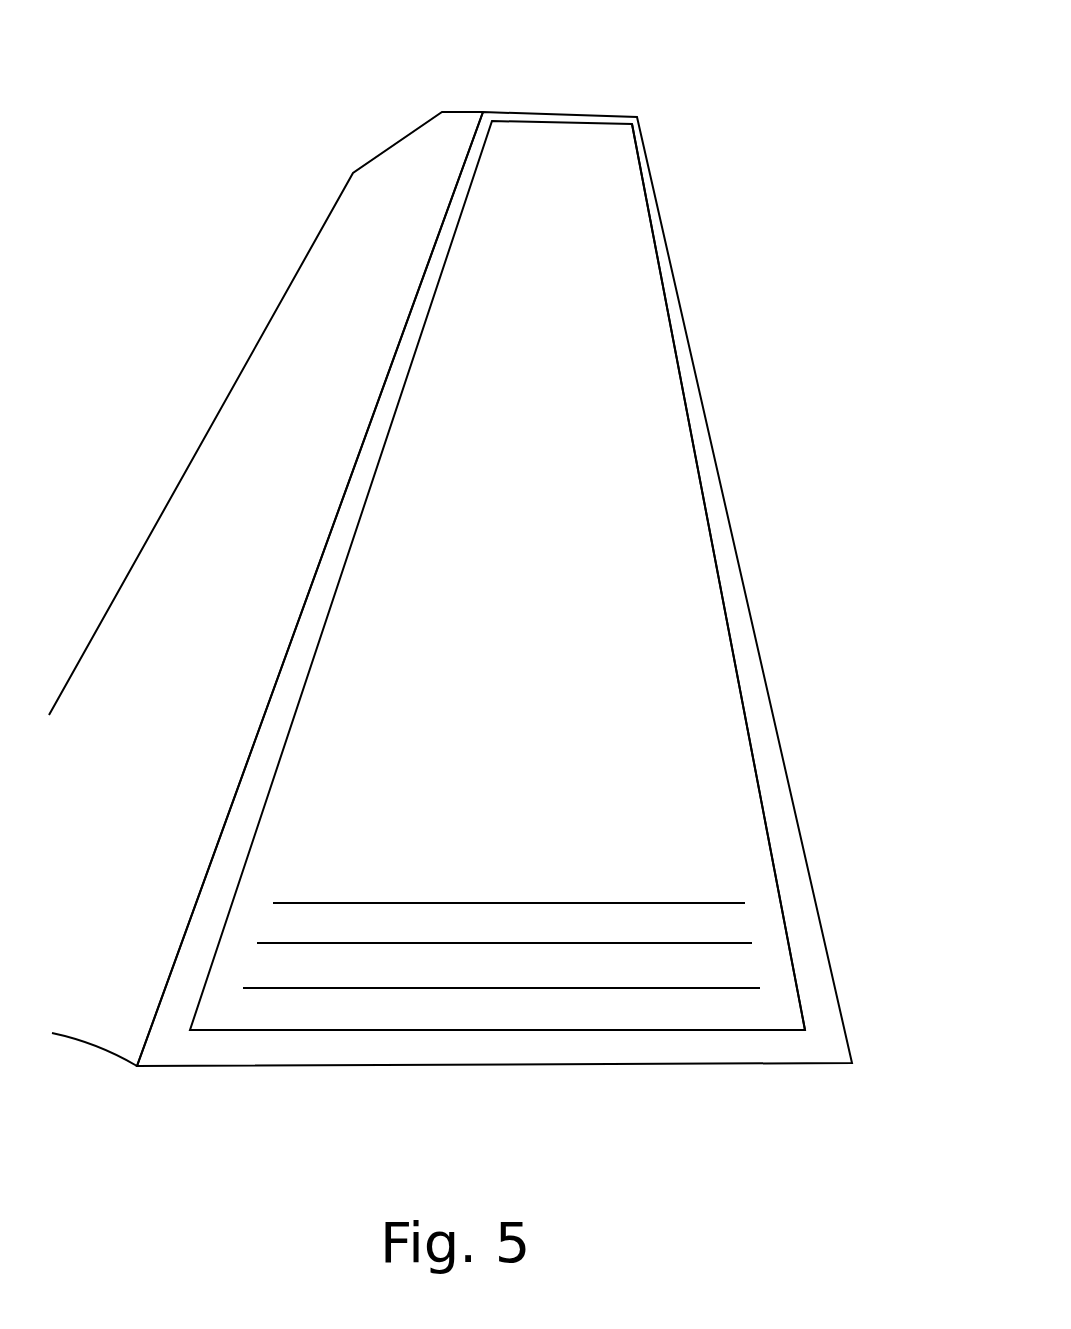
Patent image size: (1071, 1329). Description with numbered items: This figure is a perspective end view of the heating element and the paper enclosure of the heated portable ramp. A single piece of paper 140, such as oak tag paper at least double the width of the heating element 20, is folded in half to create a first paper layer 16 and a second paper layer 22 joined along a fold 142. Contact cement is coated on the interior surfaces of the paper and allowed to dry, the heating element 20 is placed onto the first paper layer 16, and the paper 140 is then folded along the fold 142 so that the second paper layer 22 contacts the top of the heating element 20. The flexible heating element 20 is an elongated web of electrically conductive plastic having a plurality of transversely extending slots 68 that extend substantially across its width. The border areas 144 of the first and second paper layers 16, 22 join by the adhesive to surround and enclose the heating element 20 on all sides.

The first paper layer 16 is at (653, 150).
The heating element 20 is at (677, 533).
The second paper layer 22 is at (443, 116).
The slots 68 is at (697, 903).
The paper 140 is at (483, 112).
The fold 142 is at (408, 314).
The border areas 144 is at (637, 117).